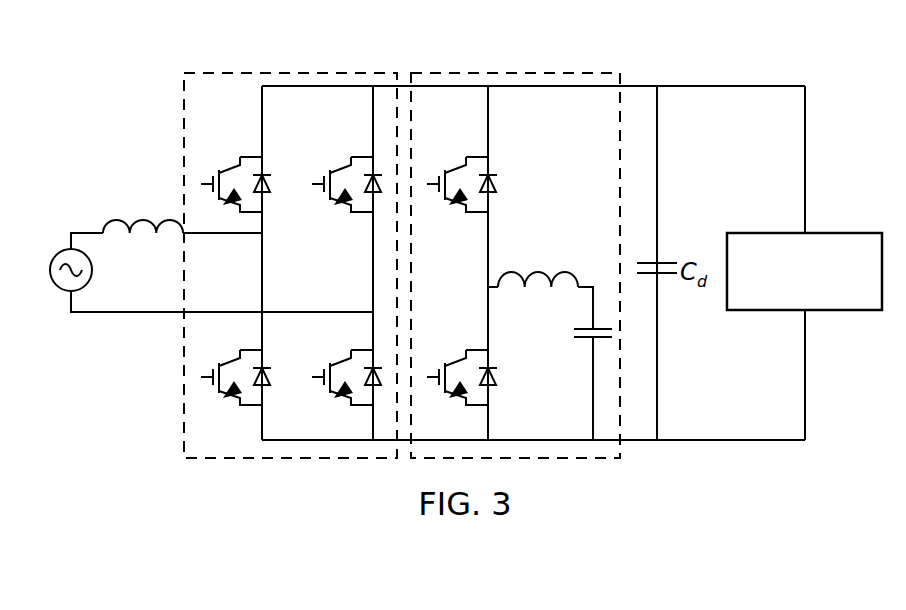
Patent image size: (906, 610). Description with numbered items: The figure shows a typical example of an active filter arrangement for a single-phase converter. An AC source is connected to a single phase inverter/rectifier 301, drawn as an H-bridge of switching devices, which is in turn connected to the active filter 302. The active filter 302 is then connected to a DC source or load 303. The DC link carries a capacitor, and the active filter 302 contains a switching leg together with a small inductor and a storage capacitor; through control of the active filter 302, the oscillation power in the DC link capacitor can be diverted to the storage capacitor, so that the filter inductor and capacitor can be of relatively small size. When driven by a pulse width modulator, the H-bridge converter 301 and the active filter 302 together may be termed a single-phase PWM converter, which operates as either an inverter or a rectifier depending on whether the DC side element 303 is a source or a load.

The single phase inverter/rectifier 301 is at (270, 70).
The active filter 302 is at (536, 70).
The DC source or load 303 is at (782, 284).